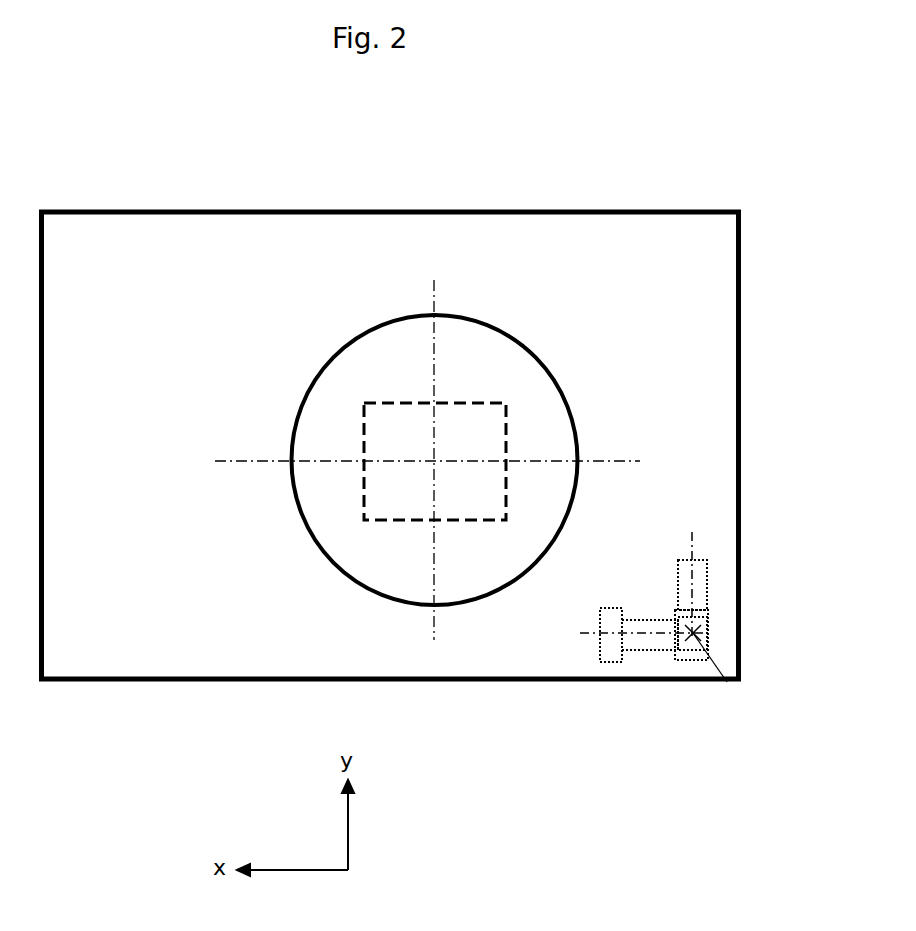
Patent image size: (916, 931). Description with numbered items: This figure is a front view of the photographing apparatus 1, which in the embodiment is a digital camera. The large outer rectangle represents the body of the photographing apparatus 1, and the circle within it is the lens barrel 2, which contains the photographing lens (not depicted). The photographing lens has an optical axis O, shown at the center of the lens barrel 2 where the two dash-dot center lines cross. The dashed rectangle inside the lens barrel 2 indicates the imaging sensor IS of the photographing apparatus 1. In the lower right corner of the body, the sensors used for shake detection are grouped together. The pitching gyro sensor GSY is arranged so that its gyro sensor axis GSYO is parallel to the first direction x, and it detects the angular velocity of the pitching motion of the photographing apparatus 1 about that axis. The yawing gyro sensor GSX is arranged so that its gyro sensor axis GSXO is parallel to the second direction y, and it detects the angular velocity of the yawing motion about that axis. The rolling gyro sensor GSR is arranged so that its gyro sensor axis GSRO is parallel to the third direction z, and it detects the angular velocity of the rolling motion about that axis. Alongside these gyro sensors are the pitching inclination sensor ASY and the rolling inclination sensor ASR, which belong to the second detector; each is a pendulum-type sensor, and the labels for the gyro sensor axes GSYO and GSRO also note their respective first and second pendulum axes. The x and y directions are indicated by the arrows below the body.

The photographing apparatus 1 is at (738, 209).
The lens barrel 2 is at (562, 377).
The imaging sensor IS is at (445, 400).
The optical axis O is at (437, 462).
The gyro sensor axis GSXO is at (692, 532).
The yawing gyro sensor GSX is at (678, 563).
The pitching gyro sensor GSY is at (670, 619).
The pitching inclination sensor ASY is at (598, 627).
The gyro sensor axis GSYO is at (582, 633).
The rolling inclination sensor ASR is at (708, 610).
The rolling gyro sensor GSR is at (708, 633).
The gyro sensor axis GSRO is at (727, 682).